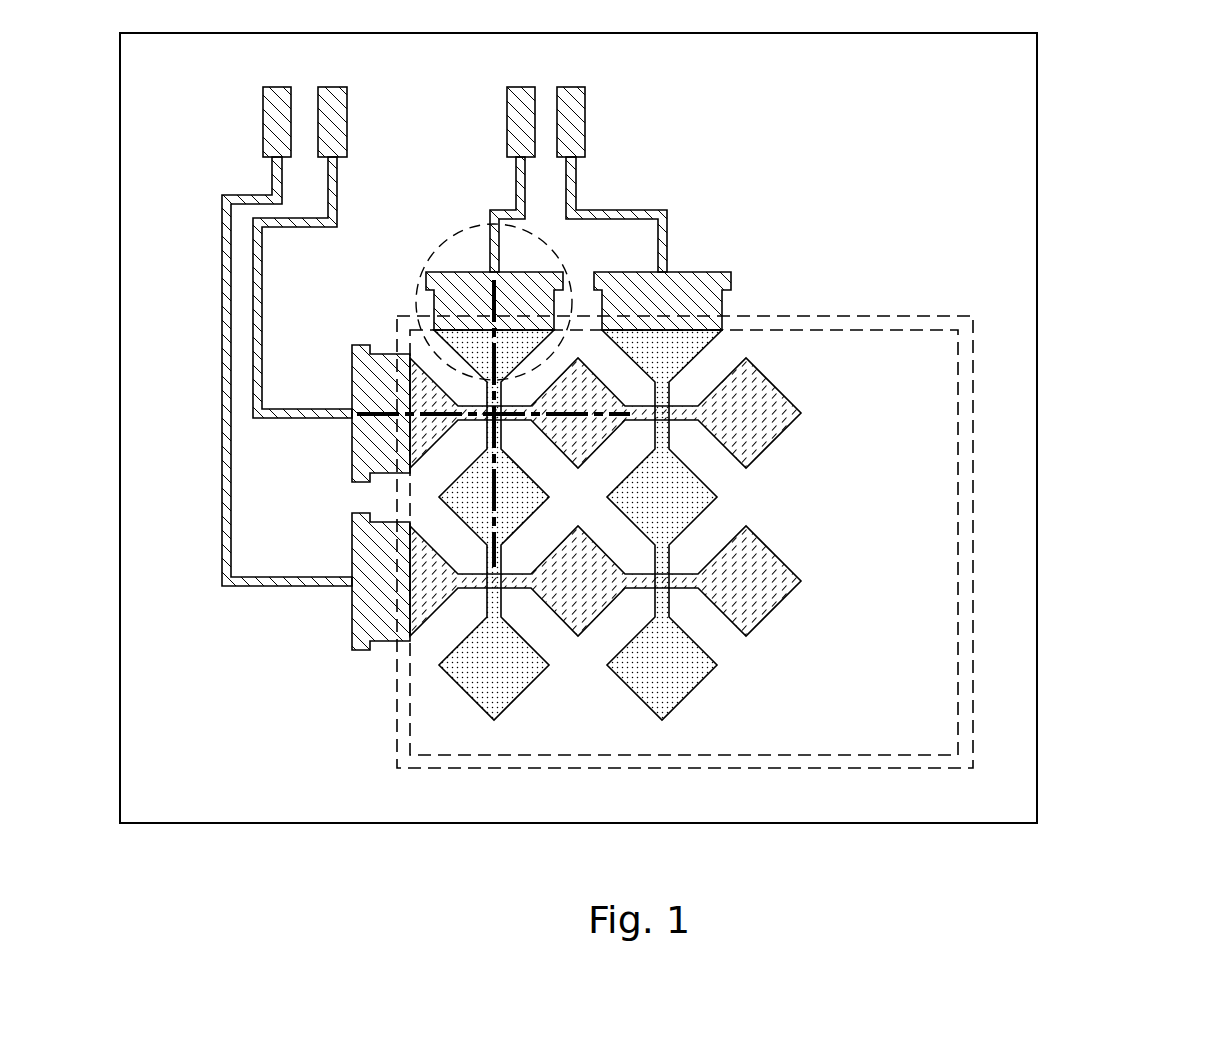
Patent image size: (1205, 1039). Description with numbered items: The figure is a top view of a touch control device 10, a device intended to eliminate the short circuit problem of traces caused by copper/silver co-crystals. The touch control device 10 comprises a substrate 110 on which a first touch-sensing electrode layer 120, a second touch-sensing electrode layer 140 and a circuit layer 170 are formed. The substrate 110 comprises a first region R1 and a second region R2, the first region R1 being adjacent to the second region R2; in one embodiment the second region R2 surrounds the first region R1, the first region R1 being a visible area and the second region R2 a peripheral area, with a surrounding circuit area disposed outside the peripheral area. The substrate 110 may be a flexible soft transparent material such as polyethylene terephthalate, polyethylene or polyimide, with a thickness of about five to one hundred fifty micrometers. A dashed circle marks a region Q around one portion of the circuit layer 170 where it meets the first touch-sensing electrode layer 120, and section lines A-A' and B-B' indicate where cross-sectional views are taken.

The touch control device 10 is at (50, 49).
The substrate 110 is at (1030, 83).
The first touch-sensing electrode layer 120 is at (478, 682).
The second touch-sensing electrode layer 140 is at (755, 595).
The circuit layer 170 is at (453, 272).
The first region R1 is at (958, 485).
The second region R2 is at (973, 532).
The enlarged region Q is at (483, 302).